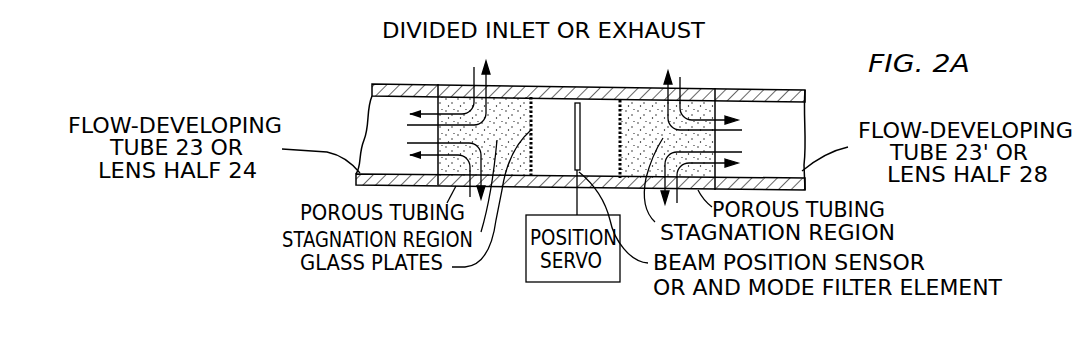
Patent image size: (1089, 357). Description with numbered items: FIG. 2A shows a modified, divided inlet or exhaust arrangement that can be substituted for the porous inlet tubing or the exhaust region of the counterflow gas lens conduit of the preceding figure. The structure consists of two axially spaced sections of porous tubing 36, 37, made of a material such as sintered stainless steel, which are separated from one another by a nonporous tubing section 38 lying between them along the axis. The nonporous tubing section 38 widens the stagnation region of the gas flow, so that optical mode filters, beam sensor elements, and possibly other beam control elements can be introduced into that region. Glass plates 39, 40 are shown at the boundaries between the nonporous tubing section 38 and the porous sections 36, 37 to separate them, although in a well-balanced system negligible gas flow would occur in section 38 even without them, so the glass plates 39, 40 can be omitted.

The section of porous tubing 36 is at (519, 89).
The section of porous tubing 37 is at (650, 91).
The nonporous tubing section 38 is at (583, 89).
The glass plate 39 is at (530, 110).
The glass plate 40 is at (622, 147).